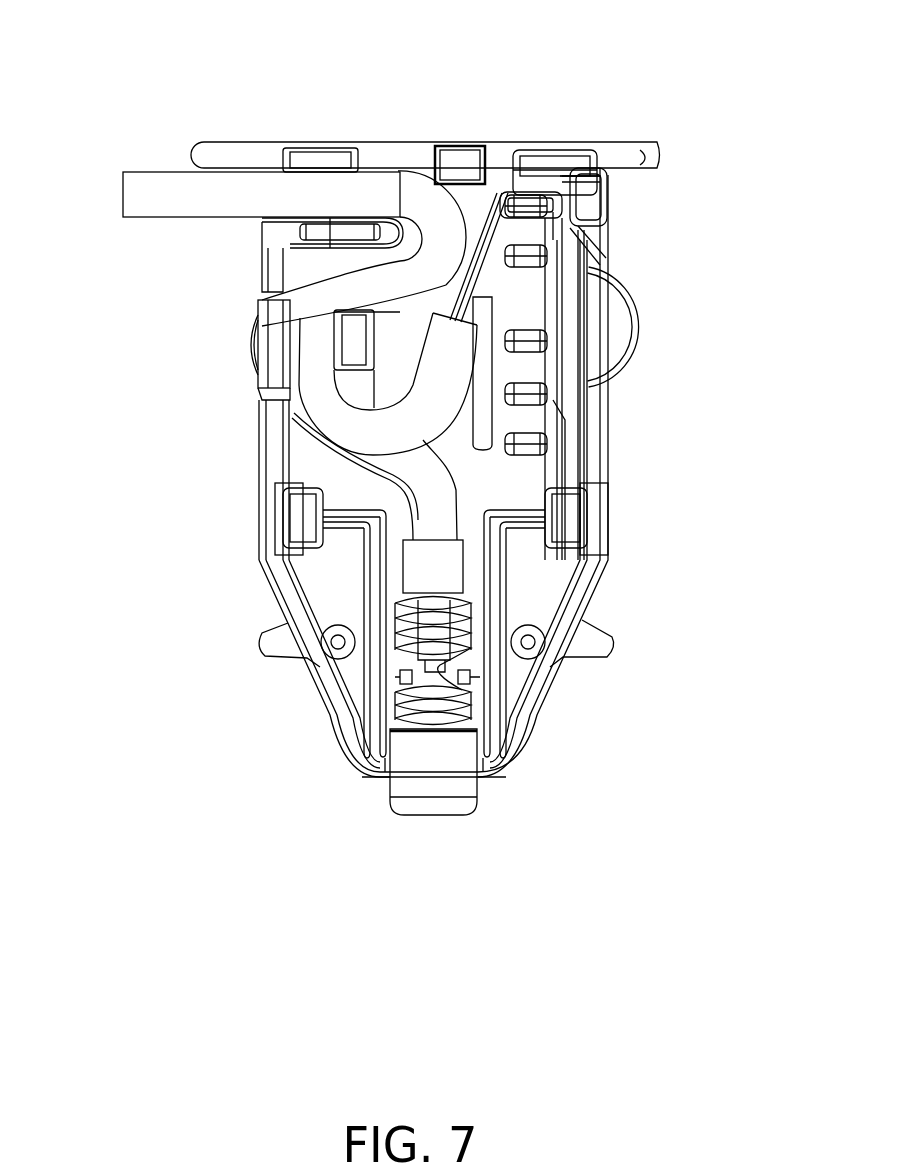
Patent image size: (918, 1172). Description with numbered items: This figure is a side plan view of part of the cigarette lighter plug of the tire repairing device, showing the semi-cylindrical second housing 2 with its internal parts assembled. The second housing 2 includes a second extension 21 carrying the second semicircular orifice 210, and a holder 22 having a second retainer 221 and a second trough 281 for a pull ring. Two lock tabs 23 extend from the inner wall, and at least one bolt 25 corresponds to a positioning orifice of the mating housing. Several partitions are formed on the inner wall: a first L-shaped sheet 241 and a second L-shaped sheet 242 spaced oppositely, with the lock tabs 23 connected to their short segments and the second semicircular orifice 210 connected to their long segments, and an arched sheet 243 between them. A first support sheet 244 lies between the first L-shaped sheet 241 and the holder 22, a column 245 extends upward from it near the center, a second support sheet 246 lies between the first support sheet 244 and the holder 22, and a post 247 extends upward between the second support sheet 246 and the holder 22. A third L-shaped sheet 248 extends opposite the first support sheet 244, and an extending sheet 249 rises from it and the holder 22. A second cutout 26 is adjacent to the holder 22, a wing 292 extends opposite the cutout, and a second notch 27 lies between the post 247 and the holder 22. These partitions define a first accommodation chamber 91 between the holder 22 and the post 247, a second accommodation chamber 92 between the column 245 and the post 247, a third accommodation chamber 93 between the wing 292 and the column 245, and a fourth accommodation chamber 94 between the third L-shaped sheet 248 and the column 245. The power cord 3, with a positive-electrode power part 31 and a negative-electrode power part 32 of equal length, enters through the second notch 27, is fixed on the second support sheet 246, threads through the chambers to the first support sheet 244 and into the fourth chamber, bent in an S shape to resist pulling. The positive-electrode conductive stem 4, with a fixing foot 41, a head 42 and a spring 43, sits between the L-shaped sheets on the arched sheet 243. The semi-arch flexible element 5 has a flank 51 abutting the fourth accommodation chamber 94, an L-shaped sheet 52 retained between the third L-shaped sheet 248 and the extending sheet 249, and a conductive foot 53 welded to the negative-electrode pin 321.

The second housing 2 is at (609, 522).
The power cord 3 is at (175, 202).
The positive-electrode conductive stem 4 is at (423, 637).
The semi-arch flexible element 5 is at (622, 305).
The second extension 21 is at (517, 733).
The holder 22 is at (588, 143).
The lock tabs 23 is at (560, 513).
The bolt 25 is at (336, 645).
The second cutout 26 is at (587, 327).
The second notch 27 is at (322, 230).
The positive-electrode power part 31 is at (345, 462).
The negative-electrode power part 32 is at (350, 427).
The fixing foot 41 is at (367, 527).
The head 42 is at (447, 810).
The spring 43 is at (410, 713).
The flank 51 is at (553, 433).
The L-shaped sheet 52 is at (550, 150).
The conductive foot 53 is at (512, 192).
The first accommodation chamber 91 is at (338, 228).
The second accommodation chamber 92 is at (350, 260).
The third accommodation chamber 93 is at (345, 342).
The fourth accommodation chamber 94 is at (498, 368).
The second semicircular orifice 210 is at (387, 782).
The second retainer 221 is at (443, 157).
The first L-shaped sheet 241 is at (373, 580).
The second L-shaped sheet 242 is at (493, 573).
The arched sheet 243 is at (470, 677).
The first support sheet 244 is at (342, 362).
The column 245 is at (368, 330).
The second support sheet 246 is at (383, 228).
The post 247 is at (286, 148).
The third L-shaped sheet 248 is at (600, 247).
The extending sheet 249 is at (605, 192).
The second trough 281 is at (657, 155).
The wing 292 is at (257, 352).
The negative-electrode pin 321 is at (452, 185).